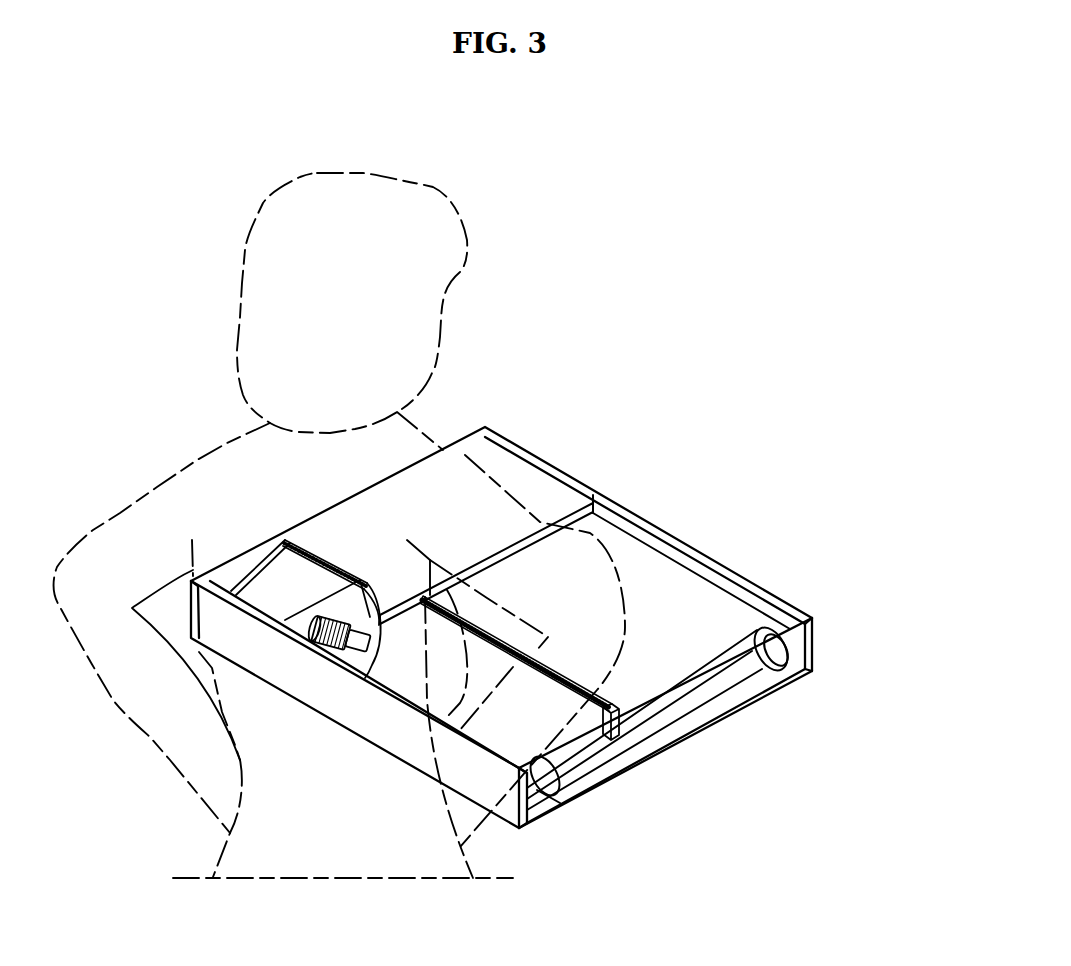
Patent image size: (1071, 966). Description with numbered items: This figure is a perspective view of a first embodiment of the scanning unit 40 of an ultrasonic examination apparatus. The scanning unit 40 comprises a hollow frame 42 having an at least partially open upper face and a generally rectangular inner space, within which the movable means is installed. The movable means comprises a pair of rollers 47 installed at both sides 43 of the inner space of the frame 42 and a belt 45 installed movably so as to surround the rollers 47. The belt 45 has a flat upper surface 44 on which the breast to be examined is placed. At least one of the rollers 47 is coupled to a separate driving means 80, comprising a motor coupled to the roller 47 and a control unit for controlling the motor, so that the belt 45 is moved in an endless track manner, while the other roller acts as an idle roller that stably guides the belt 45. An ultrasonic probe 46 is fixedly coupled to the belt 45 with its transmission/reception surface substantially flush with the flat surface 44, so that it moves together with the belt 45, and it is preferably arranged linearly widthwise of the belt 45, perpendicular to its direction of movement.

The scanning unit 40 is at (818, 633).
The hollow frame 42 is at (522, 465).
The both sides 43 is at (652, 530).
The flat upper surface 44 is at (720, 605).
The belt 45 is at (688, 672).
The ultrasonic probe 46 is at (618, 727).
The rollers 47 is at (775, 646).
The driving means 80 is at (280, 594).